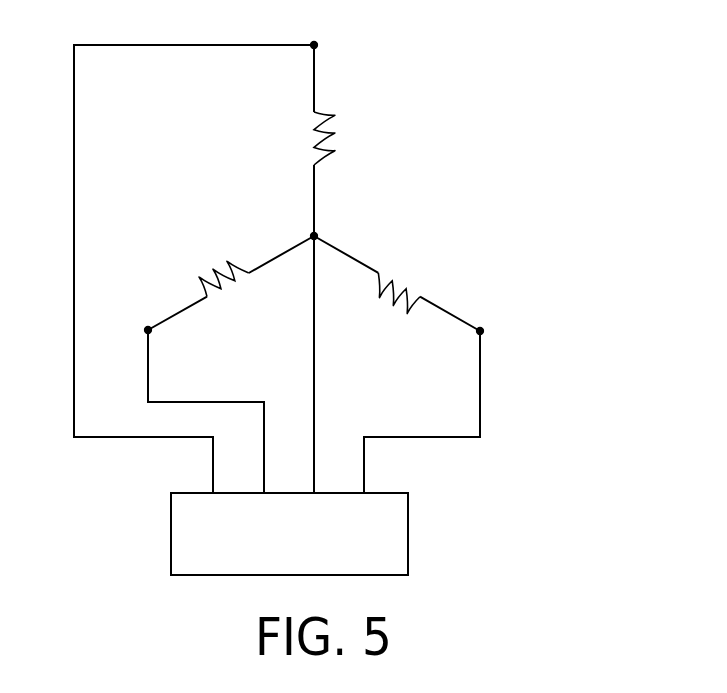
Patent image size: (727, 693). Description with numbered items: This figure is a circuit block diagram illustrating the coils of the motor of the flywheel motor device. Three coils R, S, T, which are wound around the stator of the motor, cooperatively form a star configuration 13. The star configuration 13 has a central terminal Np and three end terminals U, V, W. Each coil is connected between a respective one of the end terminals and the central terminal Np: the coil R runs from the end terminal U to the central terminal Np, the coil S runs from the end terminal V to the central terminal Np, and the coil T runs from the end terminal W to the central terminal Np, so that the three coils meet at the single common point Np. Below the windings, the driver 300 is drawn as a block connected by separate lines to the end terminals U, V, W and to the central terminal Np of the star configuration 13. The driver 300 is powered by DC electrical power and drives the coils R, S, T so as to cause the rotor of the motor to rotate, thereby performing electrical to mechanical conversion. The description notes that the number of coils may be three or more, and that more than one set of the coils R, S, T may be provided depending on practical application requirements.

The star configuration 13 is at (301, 262).
The driver 300 is at (408, 533).
The coil R is at (311, 138).
The coil S is at (223, 272).
The coil T is at (394, 279).
The end terminal U is at (327, 46).
The end terminal V is at (136, 333).
The end terminal W is at (497, 333).
The central terminal Np is at (294, 222).